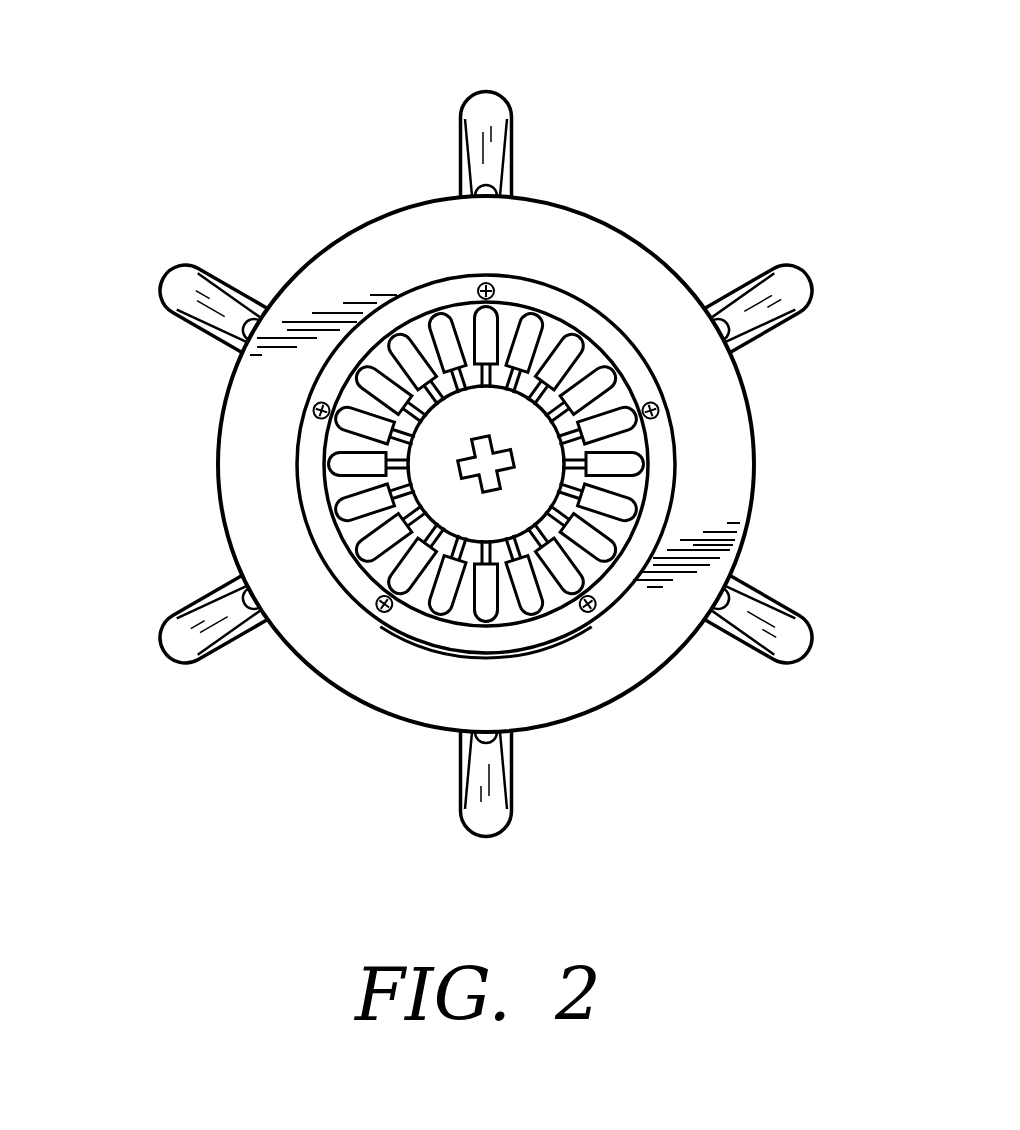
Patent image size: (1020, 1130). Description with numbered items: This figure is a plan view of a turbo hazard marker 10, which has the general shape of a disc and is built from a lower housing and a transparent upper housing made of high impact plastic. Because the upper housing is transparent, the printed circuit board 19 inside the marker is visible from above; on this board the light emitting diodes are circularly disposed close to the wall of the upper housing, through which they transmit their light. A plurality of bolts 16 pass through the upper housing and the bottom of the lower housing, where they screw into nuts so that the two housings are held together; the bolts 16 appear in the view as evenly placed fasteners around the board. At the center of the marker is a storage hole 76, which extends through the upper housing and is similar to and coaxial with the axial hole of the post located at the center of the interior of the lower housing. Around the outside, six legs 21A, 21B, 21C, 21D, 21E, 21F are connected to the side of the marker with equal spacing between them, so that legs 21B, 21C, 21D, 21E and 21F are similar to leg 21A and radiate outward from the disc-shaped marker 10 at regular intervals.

The turbo hazard marker 10 is at (252, 218).
The bolts 16 is at (497, 292).
The printed circuit board 19 is at (420, 494).
The storage hole 76 is at (500, 485).
The leg 21A is at (462, 800).
The leg 21B is at (172, 618).
The leg 21C is at (172, 318).
The leg 21D is at (463, 128).
The leg 21E is at (804, 314).
The leg 21F is at (800, 617).